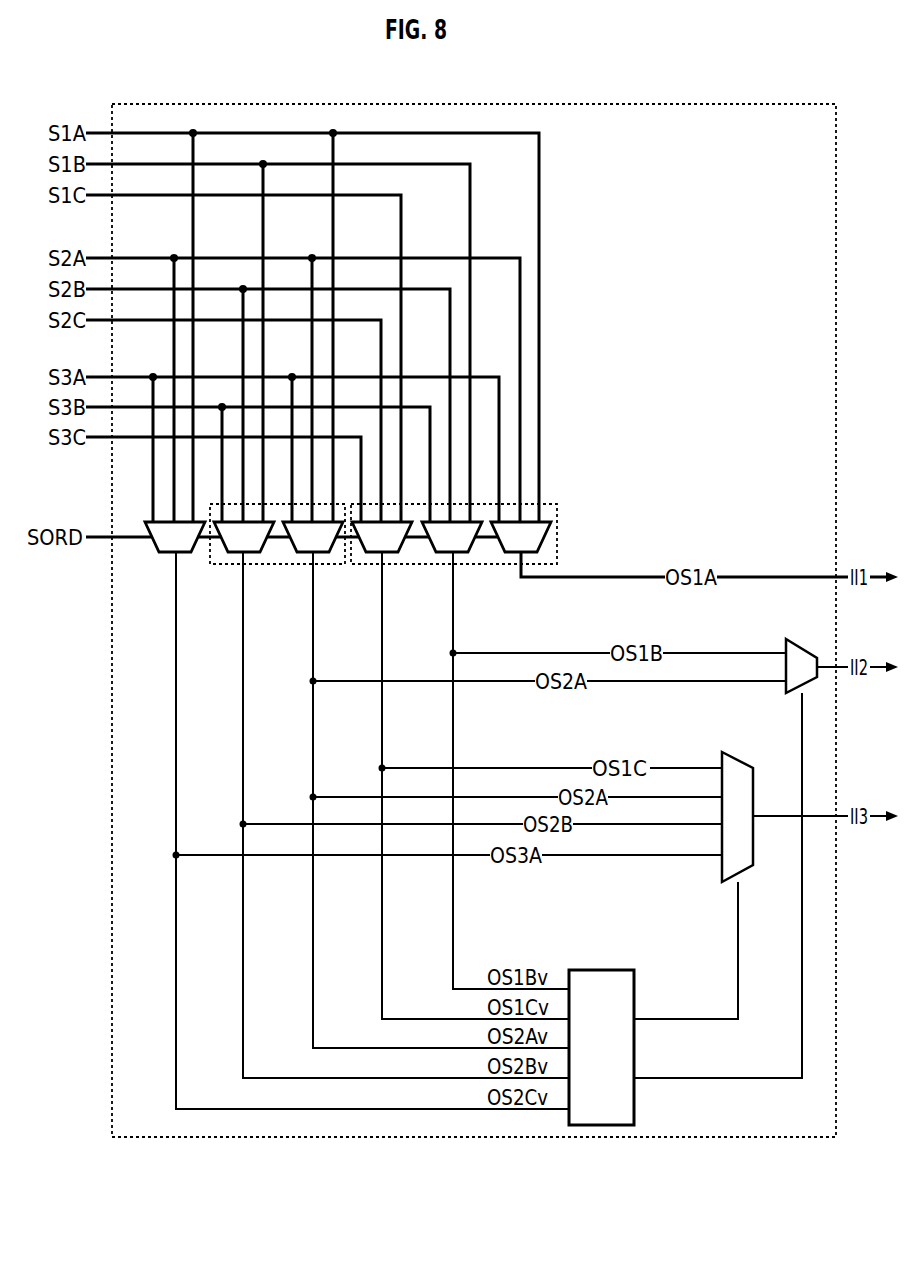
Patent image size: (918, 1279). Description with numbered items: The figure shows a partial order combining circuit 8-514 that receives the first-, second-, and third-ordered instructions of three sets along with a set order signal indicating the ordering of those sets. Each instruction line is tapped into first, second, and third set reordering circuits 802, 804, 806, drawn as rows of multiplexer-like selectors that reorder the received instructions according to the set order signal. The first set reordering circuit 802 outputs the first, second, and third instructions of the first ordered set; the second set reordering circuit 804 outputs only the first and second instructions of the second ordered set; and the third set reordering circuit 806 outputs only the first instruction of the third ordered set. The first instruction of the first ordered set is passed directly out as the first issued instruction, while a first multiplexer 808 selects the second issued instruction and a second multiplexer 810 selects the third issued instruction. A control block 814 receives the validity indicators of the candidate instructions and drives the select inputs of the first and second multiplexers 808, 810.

The partial order combining circuit 8-514 is at (433, 104).
The first set reordering circuit 802 is at (373, 565).
The second set reordering circuit 804 is at (232, 565).
The third set reordering circuit 806 is at (163, 553).
The first multiplexer 808 is at (802, 639).
The second multiplexer 810 is at (737, 752).
The validity logic block 814 is at (598, 970).